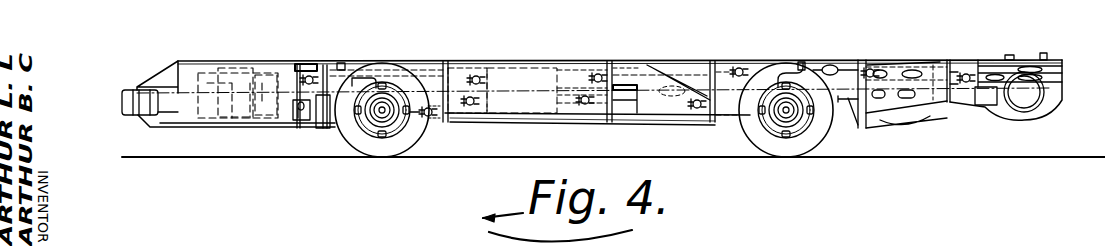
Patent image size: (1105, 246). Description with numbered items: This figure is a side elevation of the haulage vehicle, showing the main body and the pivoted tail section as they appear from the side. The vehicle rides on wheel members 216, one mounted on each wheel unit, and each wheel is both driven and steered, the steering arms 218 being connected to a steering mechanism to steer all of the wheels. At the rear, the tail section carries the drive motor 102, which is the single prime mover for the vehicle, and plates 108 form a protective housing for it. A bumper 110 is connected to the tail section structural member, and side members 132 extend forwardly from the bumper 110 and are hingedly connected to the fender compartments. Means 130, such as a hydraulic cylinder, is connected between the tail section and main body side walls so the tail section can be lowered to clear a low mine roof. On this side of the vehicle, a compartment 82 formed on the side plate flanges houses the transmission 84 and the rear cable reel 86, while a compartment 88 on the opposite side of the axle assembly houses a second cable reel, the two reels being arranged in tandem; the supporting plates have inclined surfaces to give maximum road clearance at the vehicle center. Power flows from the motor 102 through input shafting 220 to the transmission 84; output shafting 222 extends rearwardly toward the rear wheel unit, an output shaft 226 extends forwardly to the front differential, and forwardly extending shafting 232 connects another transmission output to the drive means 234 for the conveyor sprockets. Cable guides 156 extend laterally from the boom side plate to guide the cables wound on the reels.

The compartment 82 is at (537, 117).
The transmission 84 is at (534, 102).
The cable reel 86 is at (652, 72).
The compartment 88 is at (888, 66).
The drive motor 102 is at (239, 68).
The plates 108 is at (160, 72).
The bumper 110 is at (122, 104).
The means 130 is at (305, 62).
The side members 132 is at (186, 116).
The cable guides 156 is at (1047, 46).
The wheel member 216 is at (353, 143).
The steering arms 218 is at (352, 76).
The input shafting 220 is at (459, 68).
The hub connector 222 is at (440, 112).
The output shaft 226 is at (631, 92).
The forwardly extending shafting 232 is at (629, 67).
The drive means 234 is at (958, 72).